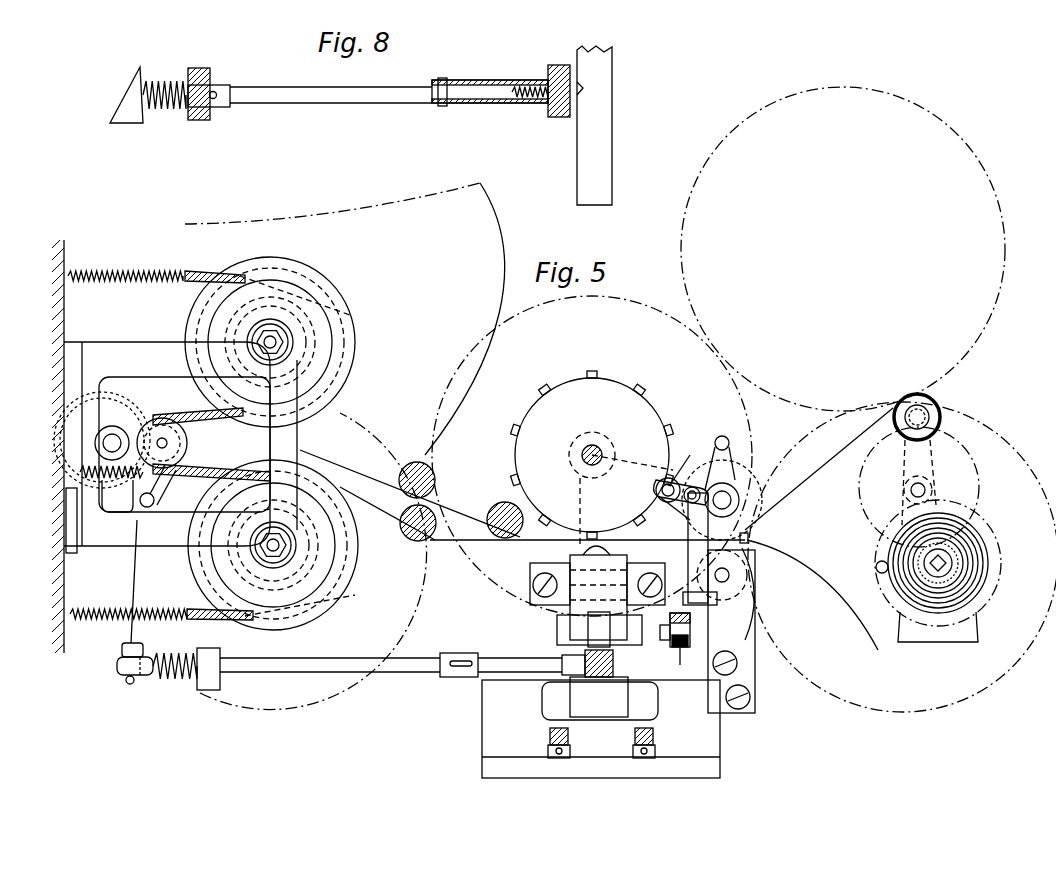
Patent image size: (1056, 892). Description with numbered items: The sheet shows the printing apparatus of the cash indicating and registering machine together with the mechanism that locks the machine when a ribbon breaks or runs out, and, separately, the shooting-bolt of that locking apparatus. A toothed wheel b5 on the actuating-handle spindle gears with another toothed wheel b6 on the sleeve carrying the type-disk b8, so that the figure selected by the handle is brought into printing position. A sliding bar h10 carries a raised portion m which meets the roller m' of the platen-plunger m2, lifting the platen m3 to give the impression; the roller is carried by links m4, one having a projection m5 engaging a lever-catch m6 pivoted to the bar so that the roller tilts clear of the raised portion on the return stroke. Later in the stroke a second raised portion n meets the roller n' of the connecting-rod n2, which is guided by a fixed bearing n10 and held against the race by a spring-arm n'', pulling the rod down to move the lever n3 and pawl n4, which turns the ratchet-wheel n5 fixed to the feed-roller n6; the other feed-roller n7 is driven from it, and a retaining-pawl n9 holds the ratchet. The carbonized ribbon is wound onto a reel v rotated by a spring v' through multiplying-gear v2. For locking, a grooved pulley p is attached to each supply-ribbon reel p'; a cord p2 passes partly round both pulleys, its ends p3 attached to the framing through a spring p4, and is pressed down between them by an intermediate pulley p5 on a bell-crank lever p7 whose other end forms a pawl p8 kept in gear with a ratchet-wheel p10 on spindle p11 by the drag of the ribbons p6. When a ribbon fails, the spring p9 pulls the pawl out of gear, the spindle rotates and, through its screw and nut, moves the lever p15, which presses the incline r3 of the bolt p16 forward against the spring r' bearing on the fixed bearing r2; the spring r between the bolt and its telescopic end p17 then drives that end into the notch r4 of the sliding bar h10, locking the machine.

In FIG. 8, the spring r is at (530, 109).
In FIG. 8, the spring r' is at (164, 81).
In FIG. 5, the spring r' is at (175, 681).
In FIG. 8, the fixed bearing r2 is at (208, 87).
In FIG. 5, the fixed bearing r2 is at (220, 652).
In FIG. 8, the incline r3 is at (126, 95).
In FIG. 5, the incline r3 is at (125, 675).
In FIG. 8, the notch r4 is at (577, 90).
In FIG. 8, the sliding bar h10 is at (594, 125).
In FIG. 5, the sliding bar h10 is at (614, 662).
In FIG. 8, the bolt p16 is at (310, 103).
In FIG. 5, the bolt p16 is at (258, 672).
In FIG. 8, the telescopic spring end p17 is at (490, 104).
In FIG. 5, the telescopic spring end p17 is at (462, 677).
In FIG. 5, the grooved pulley p is at (271, 443).
In FIG. 5, the supply-ribbon reel p' is at (295, 443).
In FIG. 5, the band or cord p2 is at (230, 300).
In FIG. 5, the cord ends p3 is at (211, 440).
In FIG. 5, the spring p4 is at (127, 457).
In FIG. 5, the intermediate pulley p5 is at (178, 448).
In FIG. 5, the ribbons p6 is at (330, 470).
In FIG. 5, the bell-crank lever p7 is at (156, 500).
In FIG. 5, the pawl p8 is at (120, 495).
In FIG. 5, the spring p9 is at (100, 472).
In FIG. 5, the ratchet-wheel p10 is at (118, 422).
In FIG. 5, the spindle p11 is at (96, 446).
In FIG. 5, the lever p15 is at (135, 600).
In FIG. 5, the toothed wheel b5 is at (868, 399).
In FIG. 5, the toothed wheel b6 is at (592, 456).
In FIG. 5, the type-disk b8 is at (592, 458).
In FIG. 5, the raised portion m is at (592, 629).
In FIG. 5, the roller m' is at (601, 727).
In FIG. 5, the platen-plunger m2 is at (598, 597).
In FIG. 5, the platen m3 is at (612, 548).
In FIG. 5, the links m4 is at (560, 610).
In FIG. 5, the projection m5 is at (557, 636).
In FIG. 5, the lever-catch m6 is at (562, 663).
In FIG. 5, the raised portion n is at (657, 627).
In FIG. 5, the roller n' is at (687, 671).
In FIG. 5, the connecting-rod n2 is at (690, 628).
In FIG. 5, the lever n3 is at (672, 514).
In FIG. 5, the pawl n4 is at (683, 456).
In FIG. 5, the ratchet-wheel n5 is at (690, 485).
In FIG. 5, the feed-roller n6 is at (760, 498).
In FIG. 5, the feed-roller n7 is at (757, 578).
In FIG. 5, the retaining-pawl n9 is at (730, 448).
In FIG. 5, the fixed bearing n10 is at (710, 552).
In FIG. 5, the spring-arm n'' is at (781, 519).
In FIG. 5, the reel v is at (925, 411).
In FIG. 5, the spring v' is at (942, 571).
In FIG. 5, the multiplying-gear v2 is at (928, 425).